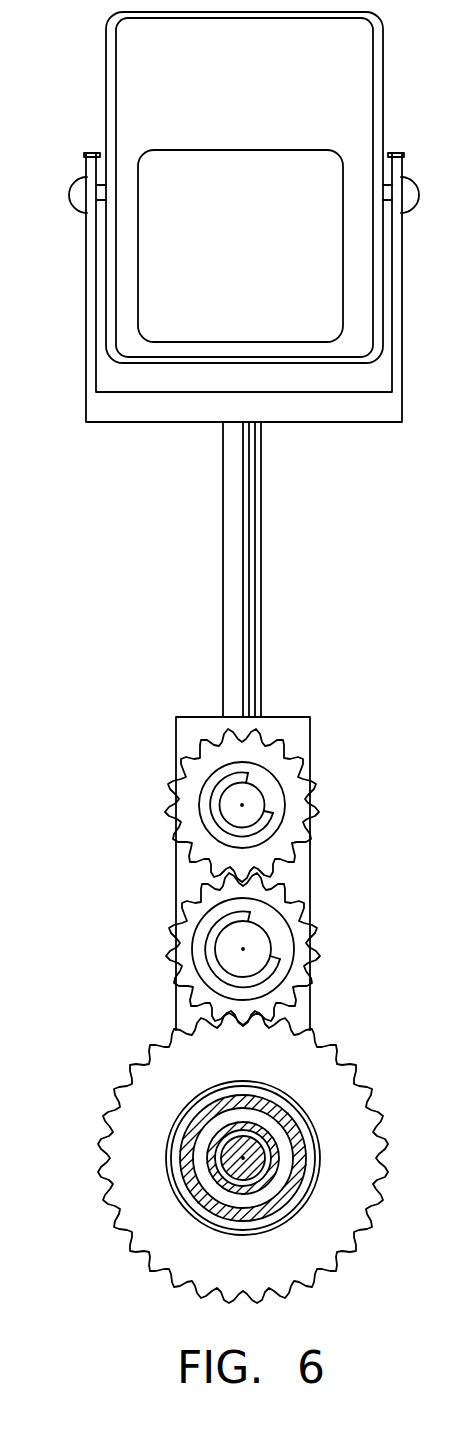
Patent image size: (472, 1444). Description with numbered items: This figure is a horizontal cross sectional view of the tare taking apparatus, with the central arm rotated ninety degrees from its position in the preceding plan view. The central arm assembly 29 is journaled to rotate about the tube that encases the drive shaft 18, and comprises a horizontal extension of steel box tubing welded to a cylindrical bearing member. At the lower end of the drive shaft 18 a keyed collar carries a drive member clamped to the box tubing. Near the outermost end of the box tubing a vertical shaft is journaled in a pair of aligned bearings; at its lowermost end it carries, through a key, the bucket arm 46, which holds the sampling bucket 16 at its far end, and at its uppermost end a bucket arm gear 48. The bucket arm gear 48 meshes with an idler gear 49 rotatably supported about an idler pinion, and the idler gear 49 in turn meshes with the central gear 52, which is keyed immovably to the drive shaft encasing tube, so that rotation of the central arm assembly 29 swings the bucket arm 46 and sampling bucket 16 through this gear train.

The sampling bucket 16 is at (107, 117).
The bucket arm 46 is at (233, 610).
The bucket arm gear 48 is at (173, 800).
The idler gear 49 is at (170, 951).
The central arm assembly 29 is at (187, 865).
The central gear 52 is at (162, 1069).
The drive shaft 18 is at (227, 1158).